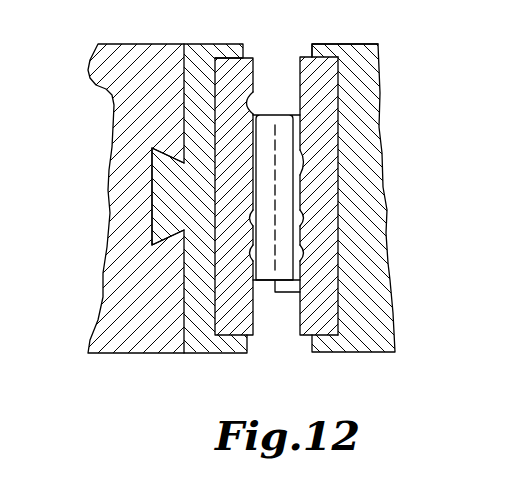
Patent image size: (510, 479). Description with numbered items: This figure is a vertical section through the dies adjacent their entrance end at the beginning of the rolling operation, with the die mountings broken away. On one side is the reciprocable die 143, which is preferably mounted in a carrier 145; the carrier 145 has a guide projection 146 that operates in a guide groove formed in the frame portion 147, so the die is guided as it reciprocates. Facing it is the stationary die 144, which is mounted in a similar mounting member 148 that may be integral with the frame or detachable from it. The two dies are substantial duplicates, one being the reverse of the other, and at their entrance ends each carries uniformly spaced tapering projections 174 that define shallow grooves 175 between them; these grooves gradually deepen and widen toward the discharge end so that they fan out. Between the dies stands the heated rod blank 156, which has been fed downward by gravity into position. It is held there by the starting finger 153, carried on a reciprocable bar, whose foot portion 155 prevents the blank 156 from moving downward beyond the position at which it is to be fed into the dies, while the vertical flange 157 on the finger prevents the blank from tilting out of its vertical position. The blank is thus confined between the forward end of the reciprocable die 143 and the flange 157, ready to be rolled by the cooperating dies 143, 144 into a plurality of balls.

The reciprocable die 143 is at (247, 60).
The stationary die 144 is at (321, 66).
The carrier 145 is at (206, 344).
The guide projection 146 is at (168, 188).
The frame portion 147 is at (130, 273).
The mounting member 148 is at (372, 188).
The starting finger 153 is at (302, 122).
The foot portion 155 is at (285, 291).
The blank 156 is at (281, 166).
The vertical flange 157 is at (305, 183).
The tapering projections 174 is at (296, 114).
The grooves 175 is at (254, 127).